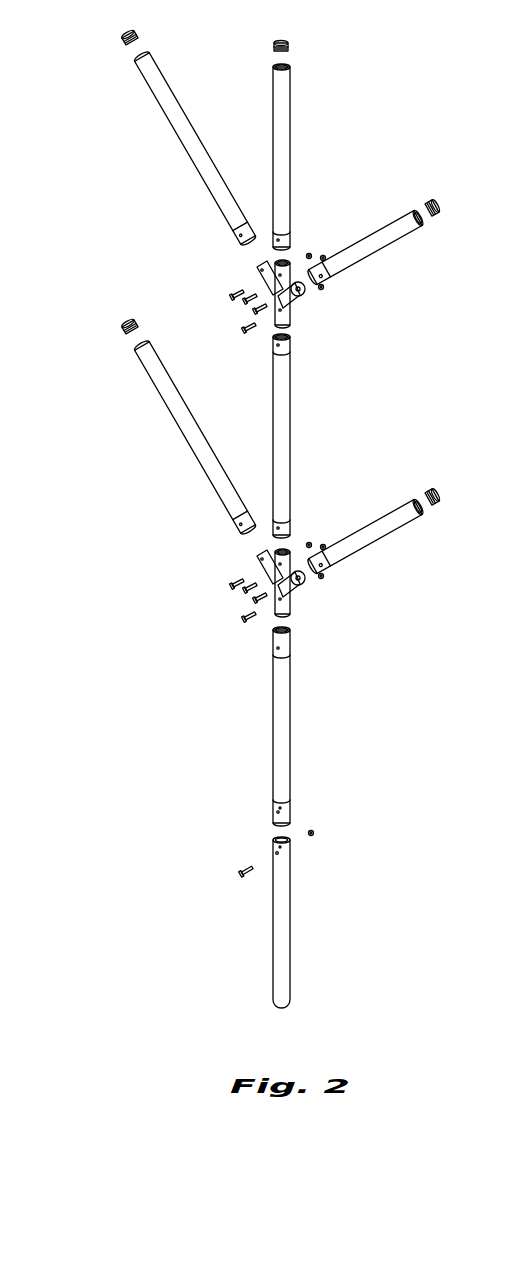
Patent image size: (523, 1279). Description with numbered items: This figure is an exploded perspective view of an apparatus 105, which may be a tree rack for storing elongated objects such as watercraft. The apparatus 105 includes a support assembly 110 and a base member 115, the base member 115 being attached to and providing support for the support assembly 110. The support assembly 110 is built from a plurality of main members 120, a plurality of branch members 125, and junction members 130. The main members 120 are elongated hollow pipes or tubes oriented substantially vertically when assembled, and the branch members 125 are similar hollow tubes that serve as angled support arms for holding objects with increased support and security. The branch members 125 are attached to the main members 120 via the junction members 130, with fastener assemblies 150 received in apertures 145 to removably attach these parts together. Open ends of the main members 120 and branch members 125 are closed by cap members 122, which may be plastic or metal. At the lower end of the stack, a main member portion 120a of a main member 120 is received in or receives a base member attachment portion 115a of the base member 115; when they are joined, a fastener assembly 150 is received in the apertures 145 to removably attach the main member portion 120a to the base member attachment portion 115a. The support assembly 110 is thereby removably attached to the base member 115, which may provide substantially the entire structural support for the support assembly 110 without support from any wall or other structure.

The apparatus 105 is at (426, 146).
The support assembly 110 is at (386, 375).
The base member 115 is at (287, 922).
The base member attachment portion 115a is at (292, 843).
The main member 120 is at (288, 145).
The main member portion 120a is at (277, 638).
The cap member 122 is at (288, 45).
The branch member 125 is at (194, 151).
The junction member 130 is at (309, 310).
The aperture 145 is at (264, 806).
The fastener assembly 150 is at (220, 887).